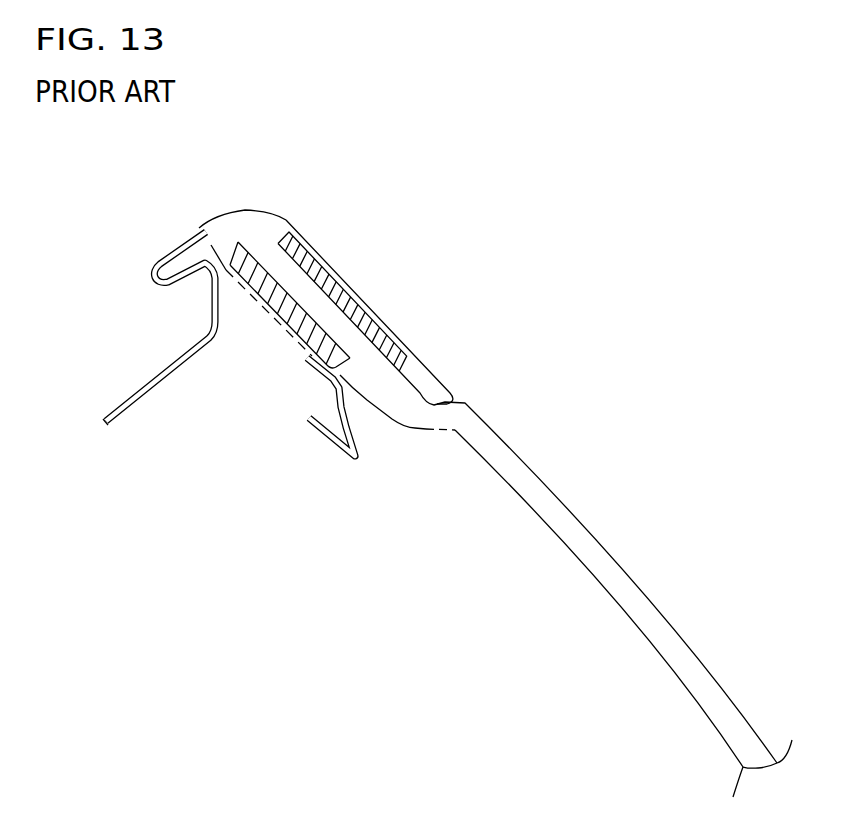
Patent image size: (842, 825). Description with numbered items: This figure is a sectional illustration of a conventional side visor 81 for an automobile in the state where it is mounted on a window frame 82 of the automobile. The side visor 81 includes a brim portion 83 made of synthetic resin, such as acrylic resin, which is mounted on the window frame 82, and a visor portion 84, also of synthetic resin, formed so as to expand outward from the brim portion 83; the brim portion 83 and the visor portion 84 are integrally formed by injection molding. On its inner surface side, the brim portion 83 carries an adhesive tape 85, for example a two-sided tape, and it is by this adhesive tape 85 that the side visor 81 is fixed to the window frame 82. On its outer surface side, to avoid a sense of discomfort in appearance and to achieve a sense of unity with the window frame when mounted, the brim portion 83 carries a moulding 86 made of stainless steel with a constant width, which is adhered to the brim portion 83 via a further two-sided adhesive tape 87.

The side visor 81 is at (474, 320).
The window frame 82 is at (195, 226).
The brim portion 83 is at (262, 237).
The visor portion 84 is at (688, 675).
The adhesive tape 85 is at (345, 365).
The moulding 86 is at (366, 304).
The adhesive tape 87 is at (318, 265).